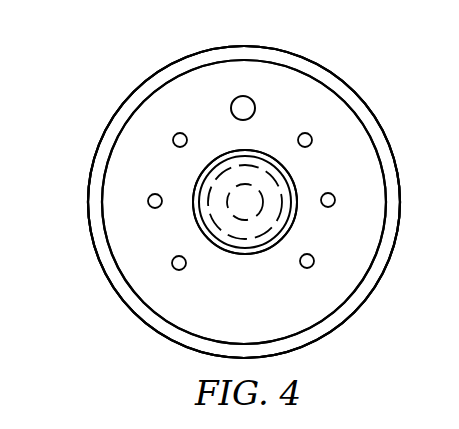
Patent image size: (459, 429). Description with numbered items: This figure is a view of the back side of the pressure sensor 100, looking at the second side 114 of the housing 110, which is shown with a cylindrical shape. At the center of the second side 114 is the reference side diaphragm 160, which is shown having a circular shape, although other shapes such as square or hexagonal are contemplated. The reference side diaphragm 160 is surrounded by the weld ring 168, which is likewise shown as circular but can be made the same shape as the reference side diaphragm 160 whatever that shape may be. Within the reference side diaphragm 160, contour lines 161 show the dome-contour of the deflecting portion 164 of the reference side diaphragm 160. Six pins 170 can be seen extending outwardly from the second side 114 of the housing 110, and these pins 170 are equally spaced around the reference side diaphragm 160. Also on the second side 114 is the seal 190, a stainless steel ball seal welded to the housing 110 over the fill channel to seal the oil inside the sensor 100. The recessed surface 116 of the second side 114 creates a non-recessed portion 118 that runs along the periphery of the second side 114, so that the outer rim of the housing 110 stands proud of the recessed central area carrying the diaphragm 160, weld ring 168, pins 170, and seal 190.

The pressure sensor 100 is at (323, 53).
The housing 110 is at (94, 152).
The second side 114 is at (261, 322).
The recessed surface 116 is at (316, 304).
The non-recessed portion 118 is at (170, 329).
The reference side diaphragm 160 is at (283, 216).
The contour lines 161 is at (259, 187).
The deflecting portion 164 is at (208, 218).
The weld ring 168 is at (199, 176).
The pins 170 is at (175, 134).
The seal 190 is at (240, 98).